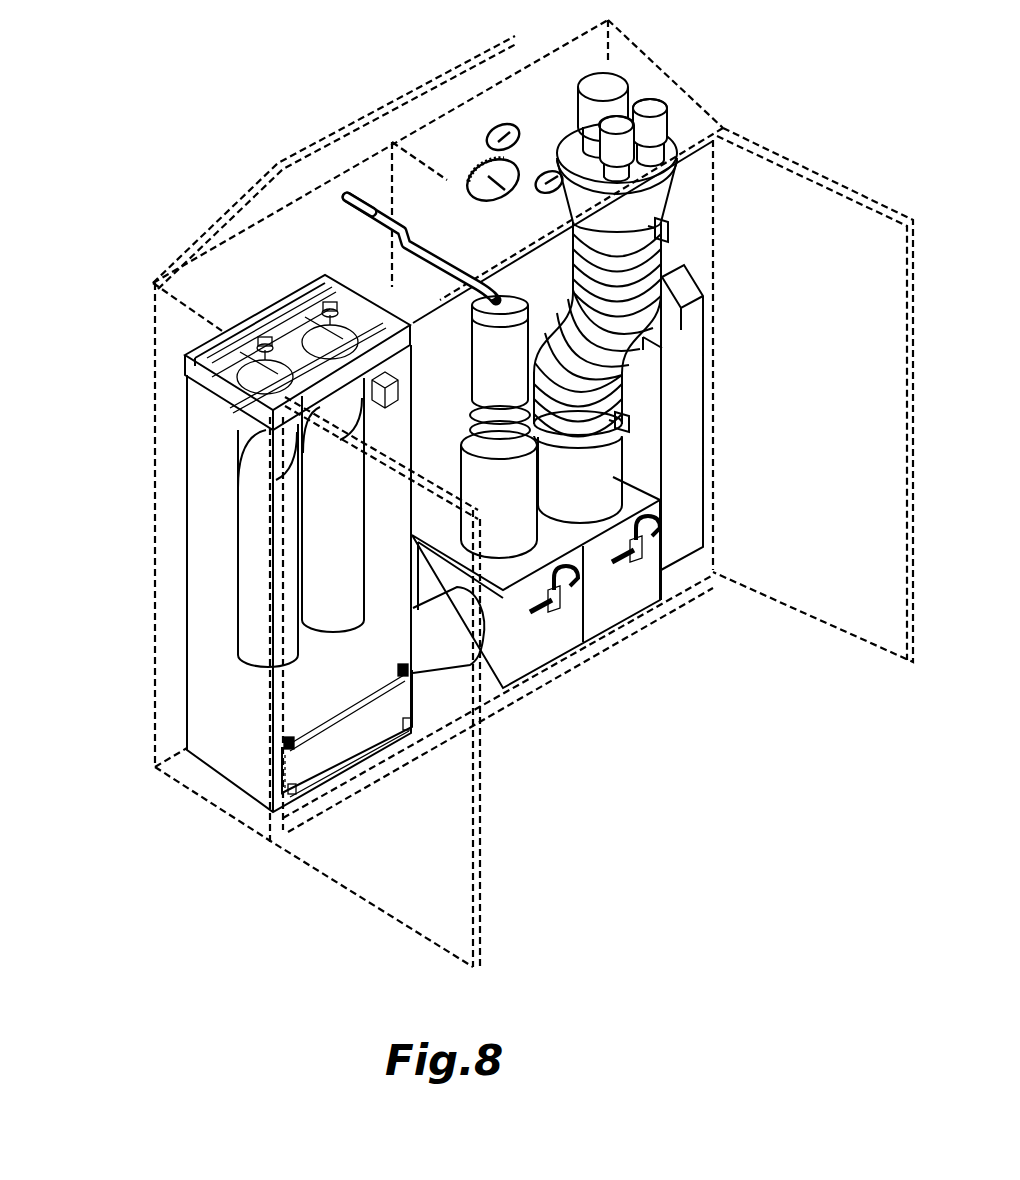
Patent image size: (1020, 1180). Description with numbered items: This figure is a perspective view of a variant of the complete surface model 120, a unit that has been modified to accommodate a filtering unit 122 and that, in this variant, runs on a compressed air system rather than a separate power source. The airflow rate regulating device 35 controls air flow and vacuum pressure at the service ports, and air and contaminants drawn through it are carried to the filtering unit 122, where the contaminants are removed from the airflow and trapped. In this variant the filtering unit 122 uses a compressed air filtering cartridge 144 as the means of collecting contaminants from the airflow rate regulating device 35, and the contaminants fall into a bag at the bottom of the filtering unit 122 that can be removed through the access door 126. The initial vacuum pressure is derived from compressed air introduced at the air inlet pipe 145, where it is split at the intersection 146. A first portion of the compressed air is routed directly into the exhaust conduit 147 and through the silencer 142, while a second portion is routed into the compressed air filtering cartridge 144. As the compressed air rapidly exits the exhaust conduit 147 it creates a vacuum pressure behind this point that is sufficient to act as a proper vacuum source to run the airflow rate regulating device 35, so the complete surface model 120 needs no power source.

The complete surface model 120 is at (400, 867).
The filtering unit 122 is at (237, 563).
The compressed air filtering cartridge 144 is at (228, 620).
The access door 126 is at (350, 747).
The air inlet pipe 145 is at (363, 198).
The intersection 146 is at (421, 161).
The exhaust conduit 147 is at (529, 372).
The silencer 142 is at (523, 501).
The airflow rate regulating device 35 is at (628, 603).